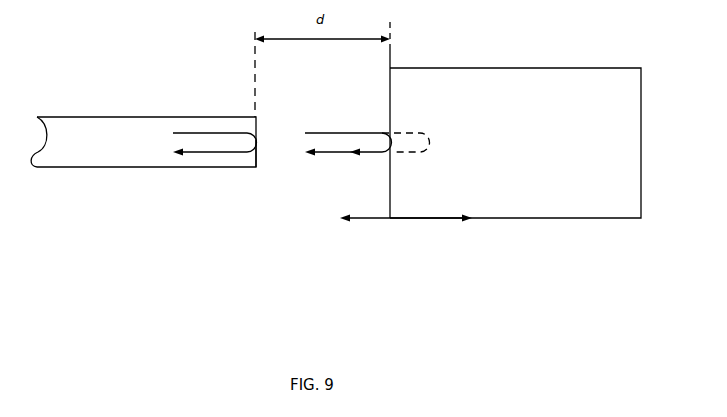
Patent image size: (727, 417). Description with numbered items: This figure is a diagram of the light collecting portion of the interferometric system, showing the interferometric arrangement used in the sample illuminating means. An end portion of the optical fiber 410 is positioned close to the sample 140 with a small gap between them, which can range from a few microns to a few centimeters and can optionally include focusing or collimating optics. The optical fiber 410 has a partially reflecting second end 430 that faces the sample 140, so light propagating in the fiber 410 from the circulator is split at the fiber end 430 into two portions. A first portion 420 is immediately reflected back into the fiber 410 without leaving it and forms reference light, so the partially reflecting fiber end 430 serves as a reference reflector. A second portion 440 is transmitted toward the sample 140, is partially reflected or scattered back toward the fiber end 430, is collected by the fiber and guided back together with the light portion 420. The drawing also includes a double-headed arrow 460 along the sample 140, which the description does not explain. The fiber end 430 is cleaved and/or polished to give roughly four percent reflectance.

The optical fiber 410 is at (138, 167).
The first portion 420 is at (215, 153).
The partially reflecting second end 430 is at (258, 171).
The second portion 440 is at (357, 153).
The sample displacement direction 460 is at (380, 219).
The sample 140 is at (500, 219).